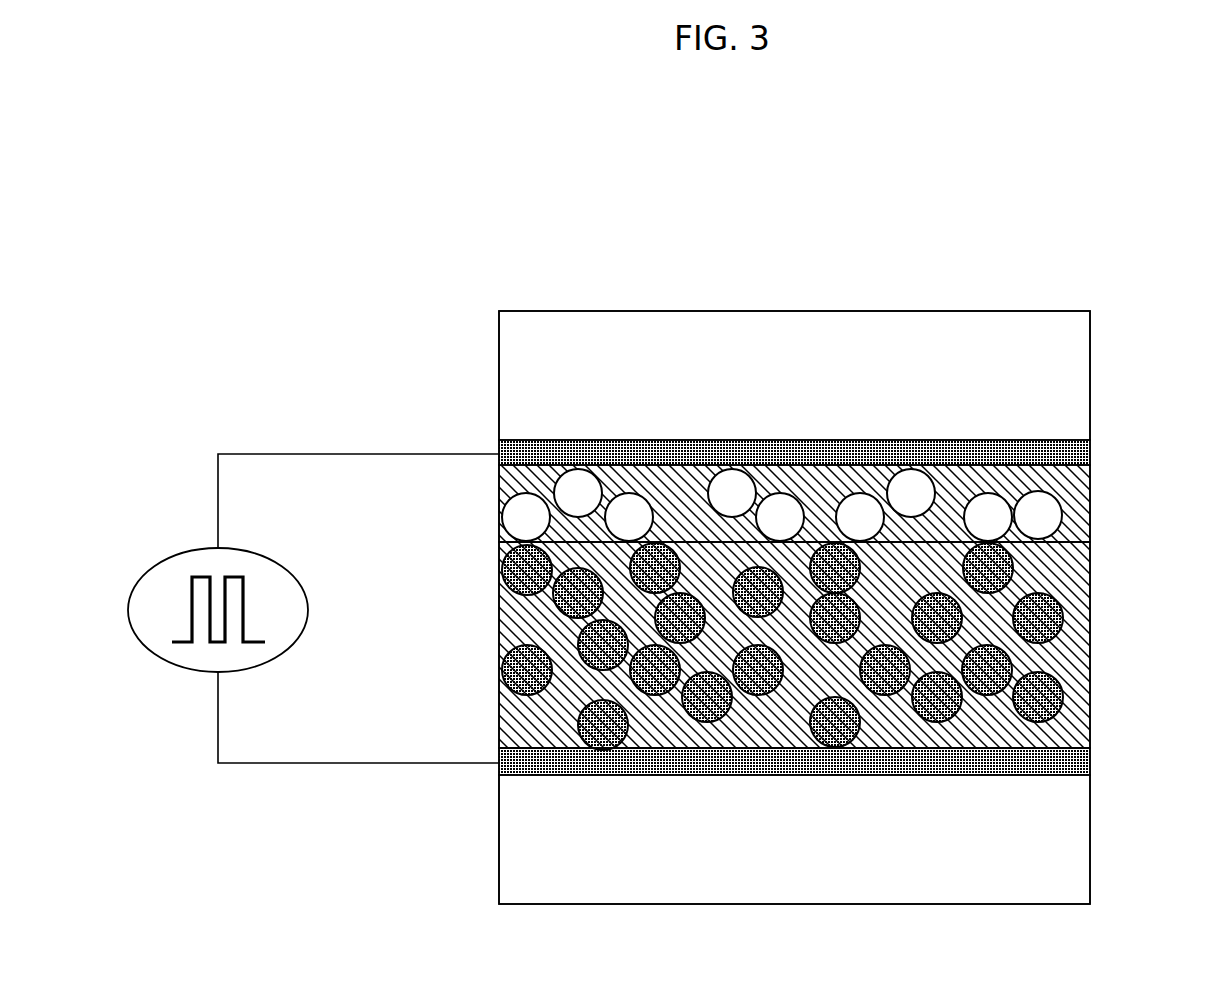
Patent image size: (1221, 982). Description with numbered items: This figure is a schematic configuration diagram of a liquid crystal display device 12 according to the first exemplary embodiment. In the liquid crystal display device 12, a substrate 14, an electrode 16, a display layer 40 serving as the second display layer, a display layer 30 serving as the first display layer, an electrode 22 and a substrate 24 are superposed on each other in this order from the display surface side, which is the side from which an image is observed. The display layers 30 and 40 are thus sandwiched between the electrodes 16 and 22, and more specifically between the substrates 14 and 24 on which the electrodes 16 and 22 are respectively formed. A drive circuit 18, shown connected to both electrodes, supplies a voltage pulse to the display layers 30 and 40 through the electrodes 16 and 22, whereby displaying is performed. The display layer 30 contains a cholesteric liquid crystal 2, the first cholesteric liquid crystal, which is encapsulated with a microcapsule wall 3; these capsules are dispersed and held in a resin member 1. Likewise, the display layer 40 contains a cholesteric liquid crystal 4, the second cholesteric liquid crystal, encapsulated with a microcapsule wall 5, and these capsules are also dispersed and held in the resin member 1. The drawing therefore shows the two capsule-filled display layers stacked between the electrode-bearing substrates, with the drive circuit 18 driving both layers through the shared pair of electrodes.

The liquid crystal display device 12 is at (995, 243).
The substrate 14 is at (1076, 371).
The electrode 16 is at (1076, 449).
The display layer 40 is at (856, 507).
The resin member 1 is at (1078, 473).
The cholesteric liquid crystal 4 is at (1048, 512).
The microcapsule wall 5 is at (825, 533).
The display layer 30 is at (856, 646).
The cholesteric liquid crystal 2 is at (1047, 612).
The microcapsule wall 3 is at (825, 684).
The electrode 22 is at (1078, 757).
The substrate 24 is at (1076, 835).
The drive circuit 18 is at (181, 669).